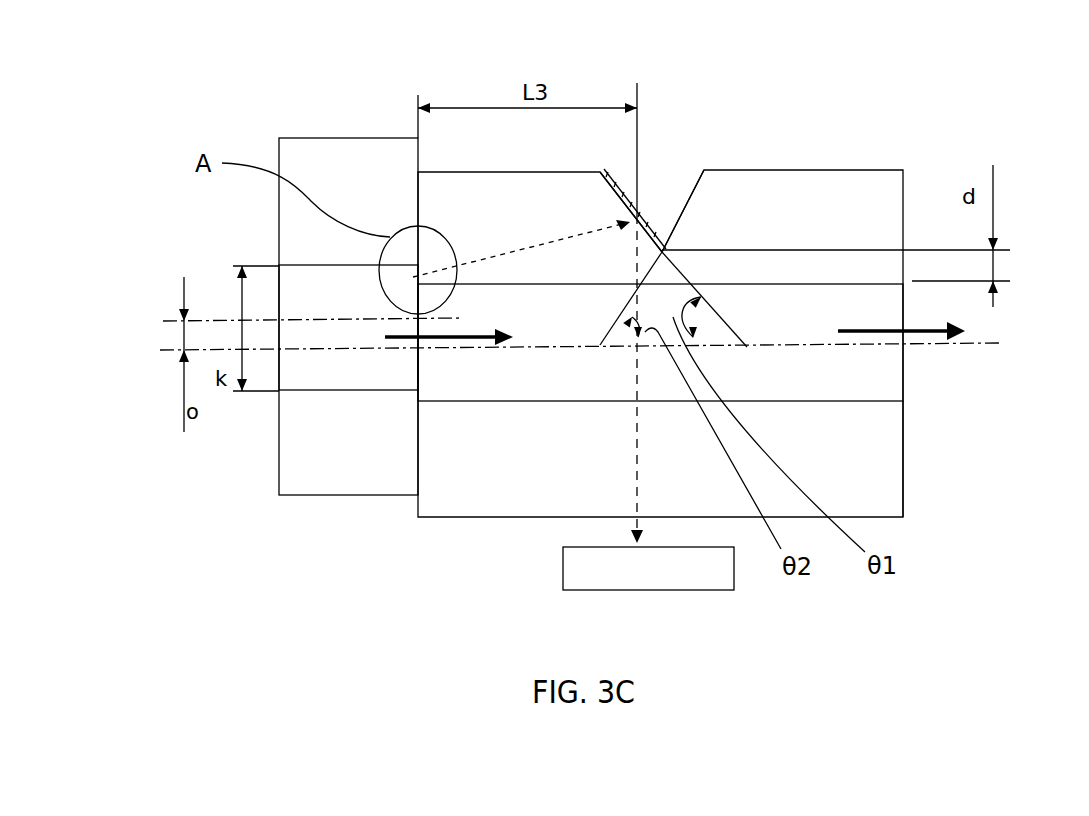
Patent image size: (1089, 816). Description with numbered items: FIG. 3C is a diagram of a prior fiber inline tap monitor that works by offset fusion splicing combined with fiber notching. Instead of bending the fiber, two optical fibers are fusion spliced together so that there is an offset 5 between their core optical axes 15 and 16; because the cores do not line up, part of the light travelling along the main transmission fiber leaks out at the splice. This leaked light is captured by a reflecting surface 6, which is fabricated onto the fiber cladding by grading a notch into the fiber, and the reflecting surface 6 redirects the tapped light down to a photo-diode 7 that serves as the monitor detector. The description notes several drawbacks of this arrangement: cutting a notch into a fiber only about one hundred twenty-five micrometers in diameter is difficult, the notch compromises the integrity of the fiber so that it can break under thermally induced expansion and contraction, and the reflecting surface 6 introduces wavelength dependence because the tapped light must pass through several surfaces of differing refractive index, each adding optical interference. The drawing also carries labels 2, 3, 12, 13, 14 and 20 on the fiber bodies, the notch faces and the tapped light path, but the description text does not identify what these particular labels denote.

The first optical fiber 2 is at (343, 477).
The second optical fiber 3 is at (883, 427).
The offset 5 is at (420, 417).
The reflecting surface 6 is at (672, 232).
The photo-diode 7 is at (717, 580).
The groove side face 12 is at (662, 252).
The fiber core 13 is at (837, 402).
The reflective surface 14 is at (652, 212).
The core optical axis 15 is at (222, 320).
The core optical axis 16 is at (986, 348).
The reflected light path 20 is at (637, 122).